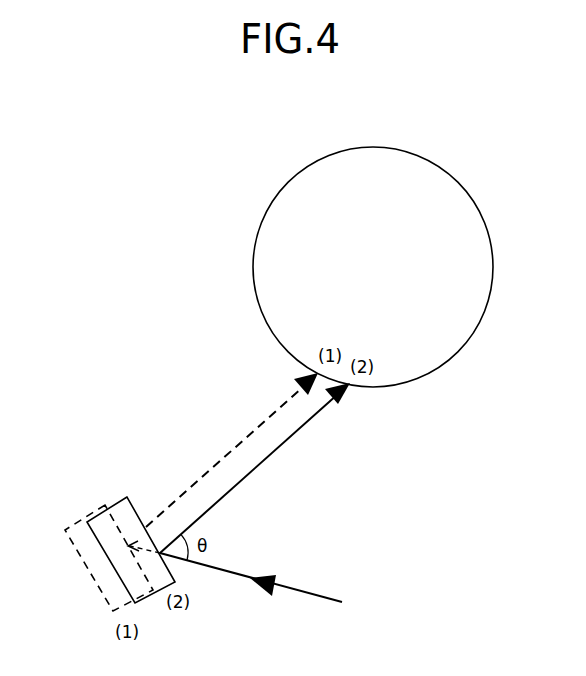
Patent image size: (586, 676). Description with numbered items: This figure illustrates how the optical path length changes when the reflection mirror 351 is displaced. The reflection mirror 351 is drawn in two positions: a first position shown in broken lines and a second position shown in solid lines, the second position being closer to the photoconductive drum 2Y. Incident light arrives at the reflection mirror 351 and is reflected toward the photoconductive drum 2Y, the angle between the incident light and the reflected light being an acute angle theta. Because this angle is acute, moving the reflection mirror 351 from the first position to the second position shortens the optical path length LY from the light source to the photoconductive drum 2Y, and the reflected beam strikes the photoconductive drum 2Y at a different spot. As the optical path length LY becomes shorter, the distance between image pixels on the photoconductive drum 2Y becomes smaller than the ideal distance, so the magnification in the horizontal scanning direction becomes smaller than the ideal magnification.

The photoconductive drum 2Y is at (423, 156).
The reflection mirror 351 is at (117, 503).
The optical path length LY is at (207, 470).